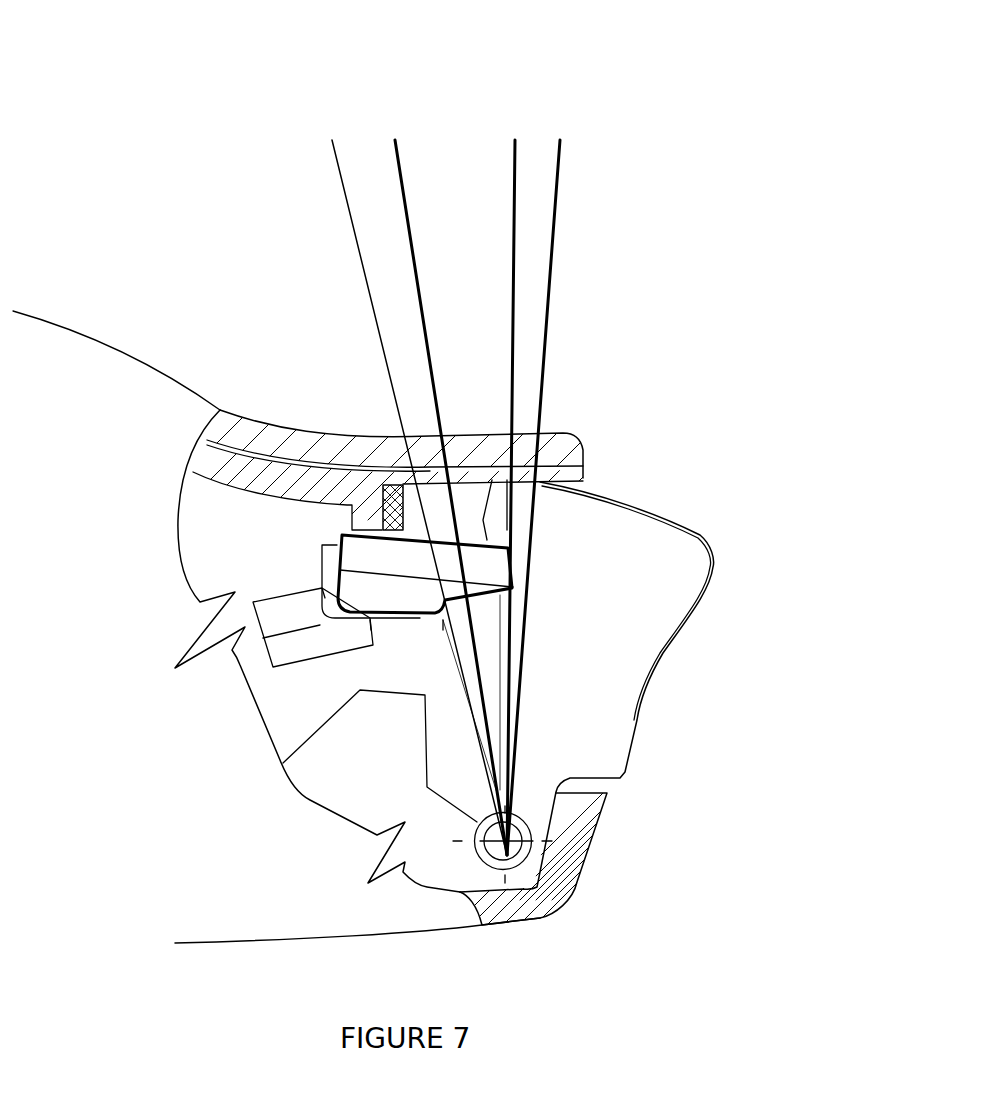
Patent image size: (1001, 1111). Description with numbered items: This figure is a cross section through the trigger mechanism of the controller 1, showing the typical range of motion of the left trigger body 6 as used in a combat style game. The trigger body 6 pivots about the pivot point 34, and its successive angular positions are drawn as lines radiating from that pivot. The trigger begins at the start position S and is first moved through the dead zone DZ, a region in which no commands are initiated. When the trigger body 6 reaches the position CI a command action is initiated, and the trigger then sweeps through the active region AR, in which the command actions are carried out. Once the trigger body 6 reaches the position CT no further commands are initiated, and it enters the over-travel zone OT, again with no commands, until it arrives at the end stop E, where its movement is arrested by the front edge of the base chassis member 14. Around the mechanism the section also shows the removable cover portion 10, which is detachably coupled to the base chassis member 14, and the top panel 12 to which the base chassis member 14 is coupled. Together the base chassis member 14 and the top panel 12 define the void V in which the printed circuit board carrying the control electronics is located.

The controller 1 is at (177, 157).
The left trigger 6 is at (632, 637).
The removable cover portion 10 is at (570, 460).
The top panel 12 is at (197, 868).
The base chassis member 14 is at (245, 478).
The pivot point 34 is at (513, 838).
The end stop E is at (353, 223).
The position C_T CT is at (407, 188).
The position C_I CI is at (515, 243).
The start position S is at (563, 167).
The over-travel zone OT is at (392, 142).
The active region AR is at (512, 142).
The dead zone DZ is at (557, 142).
The void V is at (233, 530).